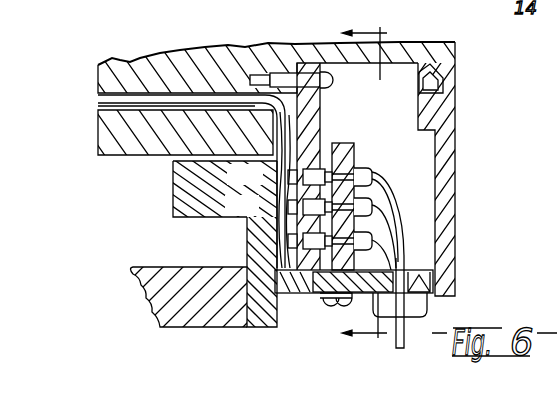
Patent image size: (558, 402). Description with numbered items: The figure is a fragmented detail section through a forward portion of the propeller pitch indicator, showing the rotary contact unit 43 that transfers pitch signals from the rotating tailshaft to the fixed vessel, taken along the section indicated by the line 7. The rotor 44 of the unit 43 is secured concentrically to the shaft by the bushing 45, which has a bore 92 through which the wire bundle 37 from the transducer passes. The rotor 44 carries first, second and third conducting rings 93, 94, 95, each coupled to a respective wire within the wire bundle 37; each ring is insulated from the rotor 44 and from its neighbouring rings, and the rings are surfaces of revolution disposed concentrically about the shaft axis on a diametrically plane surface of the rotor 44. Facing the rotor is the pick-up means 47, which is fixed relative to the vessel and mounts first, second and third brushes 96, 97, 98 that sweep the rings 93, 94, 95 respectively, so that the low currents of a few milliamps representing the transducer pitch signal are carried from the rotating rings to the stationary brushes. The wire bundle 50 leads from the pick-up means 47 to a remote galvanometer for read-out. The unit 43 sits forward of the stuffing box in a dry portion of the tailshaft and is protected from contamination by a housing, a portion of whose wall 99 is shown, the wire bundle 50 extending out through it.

The section line 7- 7 is at (366, 184).
The wire bundle 37 is at (97, 97).
The rotary contact unit 43 is at (341, 138).
The rotor 44 is at (308, 107).
The bushing 45 is at (130, 62).
The pick-up means 47 is at (359, 153).
The wire bundle 50 is at (405, 328).
The bore 92 is at (97, 104).
The first conducting ring 93 is at (275, 182).
The second conducting ring 94 is at (273, 212).
The third conducting ring 95 is at (312, 262).
The first brush 96 is at (335, 172).
The second brush 97 is at (345, 212).
The third brush 98 is at (322, 266).
The wall 99 is at (447, 243).